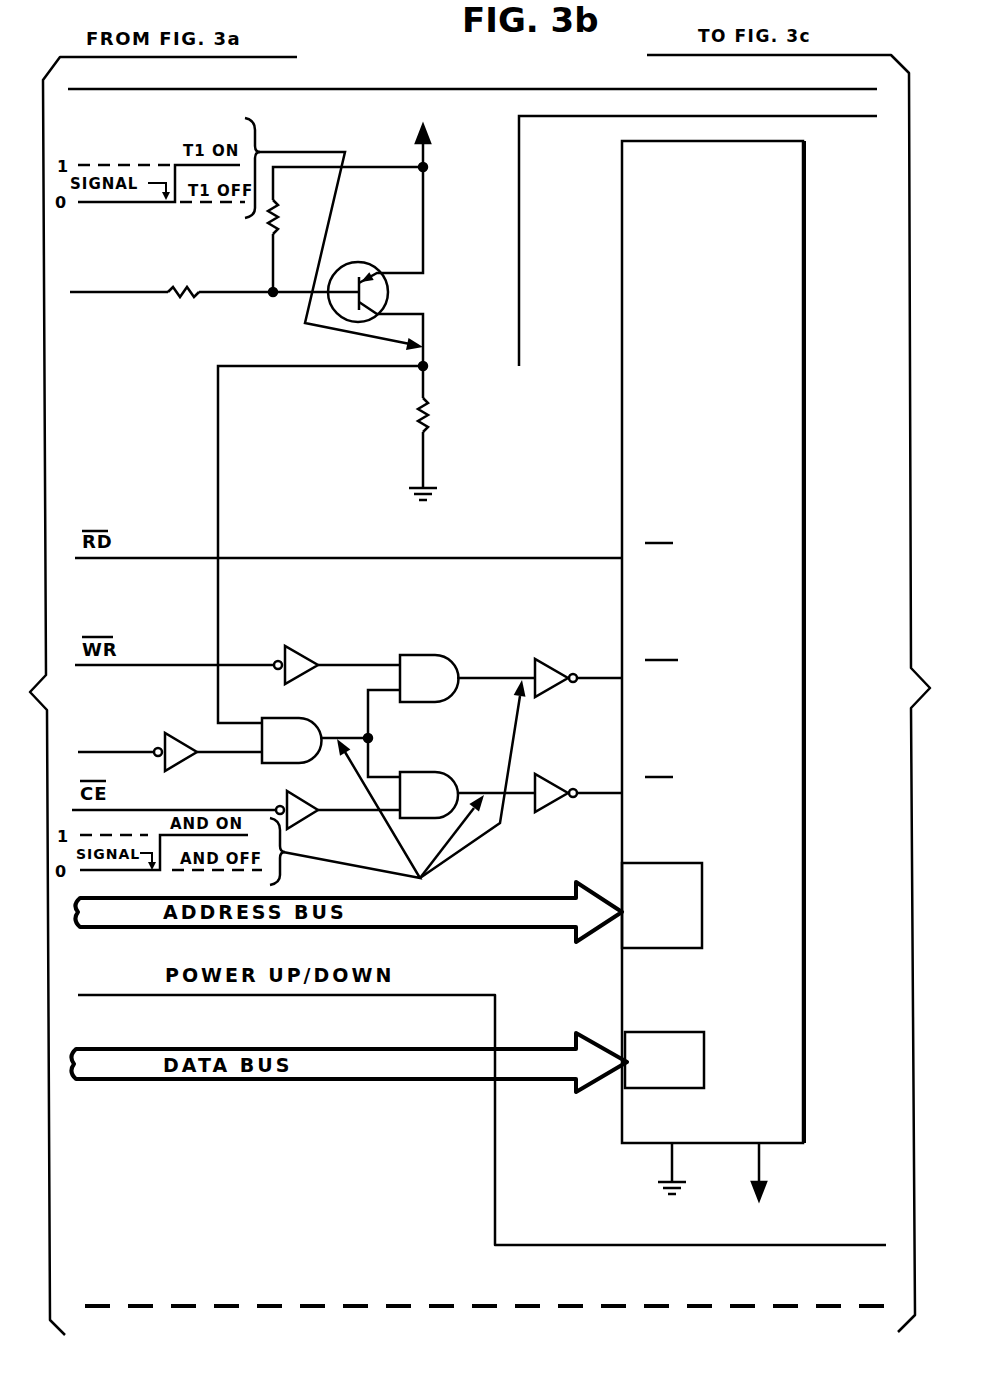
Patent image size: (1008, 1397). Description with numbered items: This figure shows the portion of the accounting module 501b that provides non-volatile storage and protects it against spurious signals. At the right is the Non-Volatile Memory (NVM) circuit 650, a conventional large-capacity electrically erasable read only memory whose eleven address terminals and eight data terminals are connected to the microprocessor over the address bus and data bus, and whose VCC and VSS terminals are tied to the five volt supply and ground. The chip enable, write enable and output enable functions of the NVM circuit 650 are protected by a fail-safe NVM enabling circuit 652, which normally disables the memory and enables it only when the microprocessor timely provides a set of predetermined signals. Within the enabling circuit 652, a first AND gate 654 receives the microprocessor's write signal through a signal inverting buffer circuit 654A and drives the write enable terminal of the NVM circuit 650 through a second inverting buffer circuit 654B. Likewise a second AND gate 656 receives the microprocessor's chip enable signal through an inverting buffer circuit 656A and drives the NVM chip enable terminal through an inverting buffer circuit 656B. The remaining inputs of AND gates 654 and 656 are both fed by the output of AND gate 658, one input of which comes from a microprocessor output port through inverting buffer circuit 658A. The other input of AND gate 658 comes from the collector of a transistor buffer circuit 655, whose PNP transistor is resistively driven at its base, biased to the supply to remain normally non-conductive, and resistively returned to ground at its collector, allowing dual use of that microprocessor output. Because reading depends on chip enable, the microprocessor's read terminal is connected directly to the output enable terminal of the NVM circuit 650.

The accounting module 501b is at (448, 74).
The Non-Volatile Memory (NVM) circuit 650 is at (795, 402).
The NVM enabling circuit 652 is at (504, 526).
The first AND gate 654 is at (437, 655).
The signal inverting buffer circuit 654A is at (323, 614).
The signal inverting buffer circuit 654B is at (570, 615).
The transistor buffer circuit 655 is at (425, 290).
The second AND gate 656 is at (443, 771).
The signal inverting buffer circuit 656A is at (310, 820).
The signal inverting buffer circuit 656B is at (575, 750).
The AND gate 658 is at (276, 765).
The signal inverting buffer circuit 658A is at (173, 731).